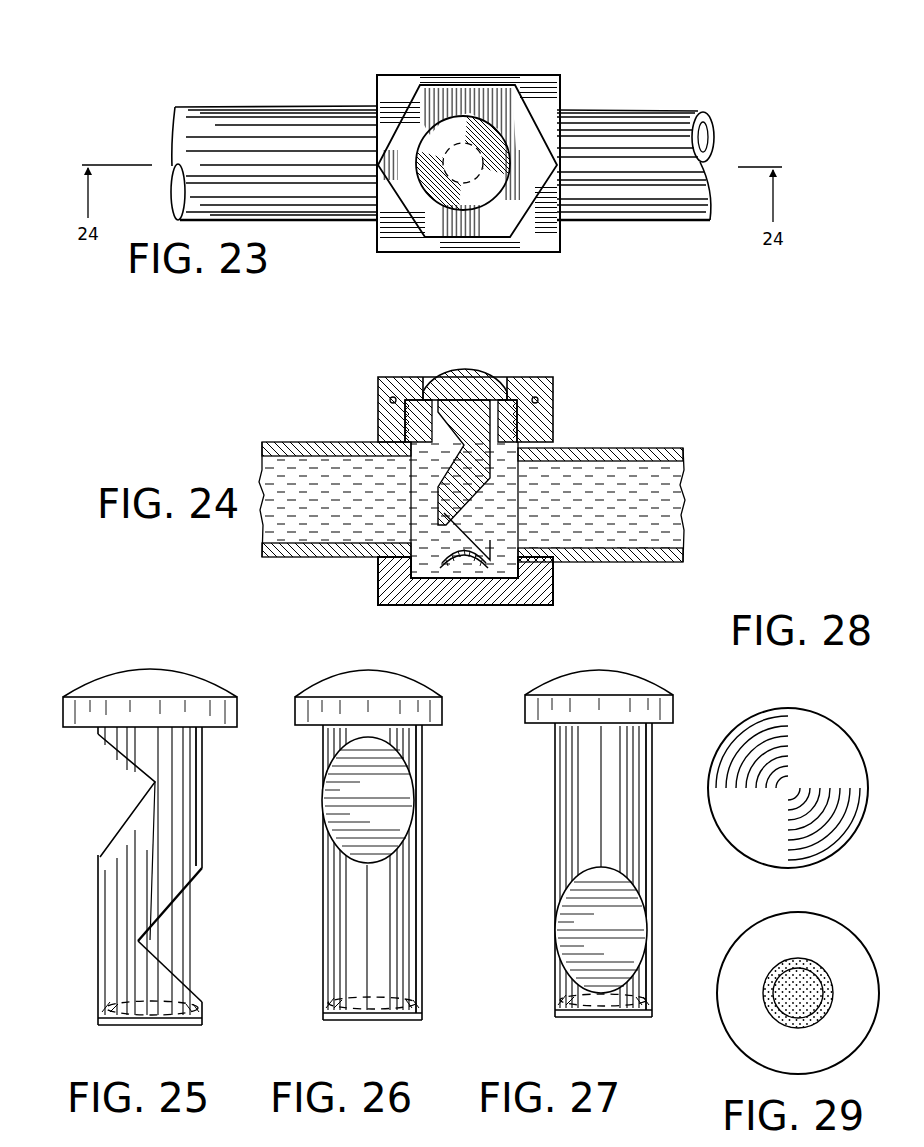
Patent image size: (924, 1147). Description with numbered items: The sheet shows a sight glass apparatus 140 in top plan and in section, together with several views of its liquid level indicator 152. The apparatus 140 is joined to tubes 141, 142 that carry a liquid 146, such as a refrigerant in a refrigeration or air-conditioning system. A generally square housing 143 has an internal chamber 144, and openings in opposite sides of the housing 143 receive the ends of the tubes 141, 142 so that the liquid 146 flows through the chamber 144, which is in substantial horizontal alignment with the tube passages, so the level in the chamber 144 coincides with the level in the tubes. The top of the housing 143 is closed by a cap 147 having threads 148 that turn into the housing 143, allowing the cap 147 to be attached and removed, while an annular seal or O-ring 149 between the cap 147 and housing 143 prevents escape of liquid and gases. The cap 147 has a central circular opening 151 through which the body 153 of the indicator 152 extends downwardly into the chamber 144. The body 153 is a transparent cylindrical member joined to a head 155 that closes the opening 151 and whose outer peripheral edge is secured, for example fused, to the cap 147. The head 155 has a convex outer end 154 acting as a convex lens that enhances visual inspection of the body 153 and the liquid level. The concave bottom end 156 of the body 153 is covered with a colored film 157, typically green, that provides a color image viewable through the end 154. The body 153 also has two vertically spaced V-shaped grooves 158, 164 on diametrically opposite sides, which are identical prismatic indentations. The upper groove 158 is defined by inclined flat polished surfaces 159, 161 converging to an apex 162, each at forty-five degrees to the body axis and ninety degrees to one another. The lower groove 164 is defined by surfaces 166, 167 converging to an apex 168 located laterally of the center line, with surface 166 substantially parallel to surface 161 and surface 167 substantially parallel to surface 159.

In FIG. 23, the sight glass apparatus 140 is at (568, 62).
In FIG. 23, the tube 141 is at (262, 120).
In FIG. 24, the tube 141 is at (290, 443).
In FIG. 23, the tube 142 is at (665, 128).
In FIG. 24, the tube 142 is at (666, 449).
In FIG. 23, the housing 143 is at (378, 242).
In FIG. 24, the housing 143 is at (394, 584).
In FIG. 24, the internal chamber 144 is at (504, 574).
In FIG. 24, the liquid 146 is at (680, 506).
In FIG. 23, the cap 147 is at (438, 100).
In FIG. 24, the cap 147 is at (386, 376).
In FIG. 24, the threads 148 is at (540, 432).
In FIG. 24, the annular seal or O-ring 149 is at (404, 418).
In FIG. 24, the central circular opening 151 is at (406, 392).
In FIG. 23, the liquid level indicator 152 is at (481, 118).
In FIG. 24, the liquid level indicator 152 is at (449, 487).
In FIG. 25, the liquid level indicator 152 is at (144, 832).
In FIG. 24, the body 153 is at (530, 478).
In FIG. 25, the body 153 is at (112, 910).
In FIG. 26, the body 153 is at (402, 893).
In FIG. 27, the body 153 is at (561, 785).
In FIG. 23, the convex outer end 154 is at (464, 205).
In FIG. 24, the convex outer end 154 is at (465, 360).
In FIG. 25, the convex outer end 154 is at (172, 673).
In FIG. 26, the convex outer end 154 is at (345, 680).
In FIG. 27, the convex outer end 154 is at (622, 683).
In FIG. 28, the convex outer end 154 is at (808, 732).
In FIG. 24, the head 155 is at (524, 378).
In FIG. 25, the head 155 is at (68, 712).
In FIG. 26, the head 155 is at (296, 712).
In FIG. 27, the head 155 is at (525, 713).
In FIG. 28, the head 155 is at (841, 853).
In FIG. 29, the head 155 is at (842, 950).
In FIG. 25, the bottom end 156 is at (130, 1002).
In FIG. 26, the bottom end 156 is at (336, 1003).
In FIG. 27, the bottom end 156 is at (660, 988).
In FIG. 24, the film 157 is at (462, 566).
In FIG. 25, the film 157 is at (140, 1026).
In FIG. 26, the film 157 is at (348, 1021).
In FIG. 27, the film 157 is at (566, 1030).
In FIG. 29, the film 157 is at (792, 1004).
In FIG. 24, the V-shaped groove 158 is at (452, 452).
In FIG. 25, the V-shaped groove 158 is at (112, 793).
In FIG. 25, the inclined flat polished surface 159 is at (113, 753).
In FIG. 26, the inclined flat polished surface 159 is at (348, 763).
In FIG. 25, the inclined flat polished surface 161 is at (114, 835).
In FIG. 25, the apex 162 is at (163, 788).
In FIG. 26, the apex 162 is at (330, 806).
In FIG. 24, the second V-shaped groove 164 is at (482, 556).
In FIG. 25, the second V-shaped groove 164 is at (160, 934).
In FIG. 25, the inclined flat polished surface 166 is at (190, 893).
In FIG. 27, the inclined flat polished surface 166 is at (575, 906).
In FIG. 25, the inclined flat polished surface 167 is at (185, 984).
In FIG. 27, the inclined flat polished surface 167 is at (576, 990).
In FIG. 25, the apex 168 is at (140, 942).
In FIG. 27, the apex 168 is at (568, 956).